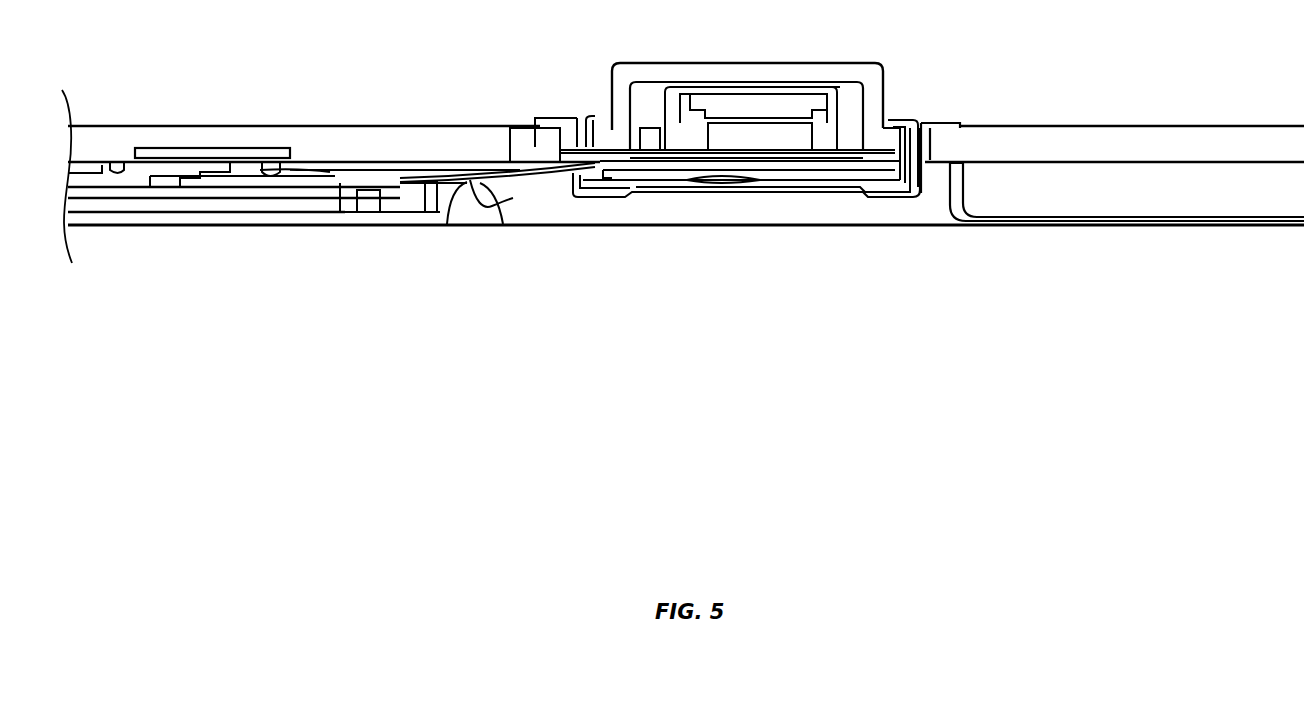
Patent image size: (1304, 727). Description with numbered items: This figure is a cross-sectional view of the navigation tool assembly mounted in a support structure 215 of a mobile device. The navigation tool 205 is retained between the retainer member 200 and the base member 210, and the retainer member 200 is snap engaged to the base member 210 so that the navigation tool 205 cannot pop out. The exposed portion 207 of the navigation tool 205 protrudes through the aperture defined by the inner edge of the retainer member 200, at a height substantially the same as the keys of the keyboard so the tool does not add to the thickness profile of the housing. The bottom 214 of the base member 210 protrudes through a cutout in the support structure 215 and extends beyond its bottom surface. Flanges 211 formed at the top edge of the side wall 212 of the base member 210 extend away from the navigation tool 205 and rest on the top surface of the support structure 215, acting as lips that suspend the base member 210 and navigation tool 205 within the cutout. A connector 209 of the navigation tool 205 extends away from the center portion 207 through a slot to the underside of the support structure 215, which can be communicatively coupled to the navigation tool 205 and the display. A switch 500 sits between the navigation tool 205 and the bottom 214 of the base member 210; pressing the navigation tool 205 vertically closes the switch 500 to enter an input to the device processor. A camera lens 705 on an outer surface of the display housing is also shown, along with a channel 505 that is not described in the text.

The retainer member 200 is at (900, 118).
The navigation tool 205 is at (620, 130).
The exposed portion 207 is at (875, 62).
The connector 209 is at (372, 225).
The base member 210 is at (690, 193).
The flange 211 is at (557, 118).
The side wall 212 is at (923, 178).
The bottom 214 is at (828, 185).
The support structure 215 is at (316, 136).
The switch 500 is at (743, 182).
The lower channel 505 is at (1098, 200).
The camera lens 705 is at (200, 152).